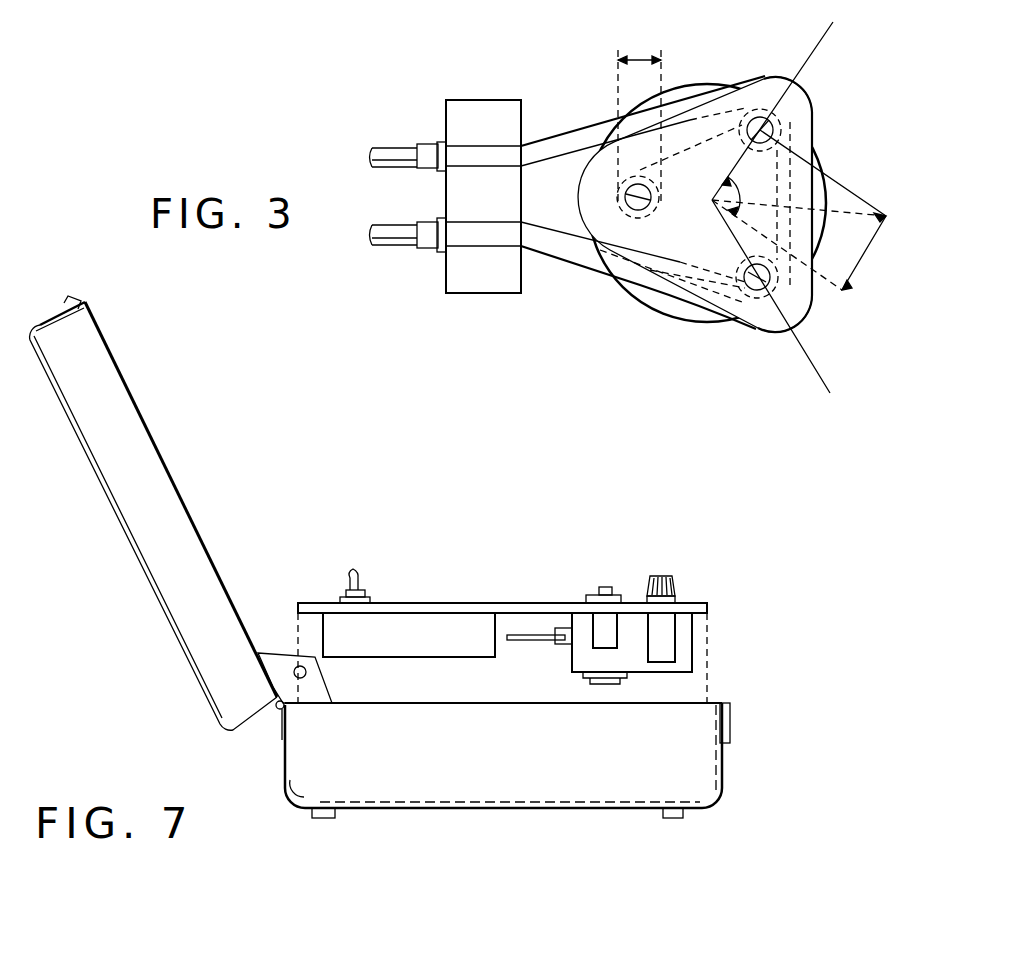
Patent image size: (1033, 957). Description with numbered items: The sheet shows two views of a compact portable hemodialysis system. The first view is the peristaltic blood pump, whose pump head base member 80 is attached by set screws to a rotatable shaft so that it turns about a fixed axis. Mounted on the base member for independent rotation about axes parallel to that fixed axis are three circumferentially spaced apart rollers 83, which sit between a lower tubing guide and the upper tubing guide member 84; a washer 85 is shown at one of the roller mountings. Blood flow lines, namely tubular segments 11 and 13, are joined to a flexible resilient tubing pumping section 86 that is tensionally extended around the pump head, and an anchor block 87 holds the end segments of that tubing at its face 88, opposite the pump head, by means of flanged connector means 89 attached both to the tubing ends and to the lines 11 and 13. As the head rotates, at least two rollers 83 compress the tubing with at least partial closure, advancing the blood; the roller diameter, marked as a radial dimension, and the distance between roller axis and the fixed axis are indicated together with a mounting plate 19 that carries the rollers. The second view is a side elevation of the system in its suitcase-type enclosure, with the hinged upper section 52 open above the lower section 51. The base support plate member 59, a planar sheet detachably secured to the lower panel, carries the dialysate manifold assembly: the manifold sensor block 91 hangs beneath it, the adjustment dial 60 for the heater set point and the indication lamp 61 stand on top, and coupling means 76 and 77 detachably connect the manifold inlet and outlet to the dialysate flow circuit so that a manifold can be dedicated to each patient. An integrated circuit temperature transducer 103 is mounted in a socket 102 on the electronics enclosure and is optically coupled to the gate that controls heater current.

In FIG. 3, the tubular segment 11 is at (398, 243).
In FIG. 3, the tubular segment 13 is at (397, 153).
In FIG. 3, the mounting plate 19 is at (701, 78).
In FIG. 3, the pump head base member 80 is at (680, 300).
In FIG. 3, the rollers 83 is at (760, 293).
In FIG. 3, the upper tubing guide member 84 is at (770, 80).
In FIG. 3, the washer 85 is at (750, 298).
In FIG. 3, the flexible resilient tubing pumping section 86 is at (578, 258).
In FIG. 3, the anchor block 87 is at (470, 273).
In FIG. 3, the face of the anchor block 88 is at (446, 188).
In FIG. 3, the flanged connector means 89 is at (440, 252).
In FIG. 7, the lower section 51 is at (565, 797).
In FIG. 7, the upper section 52 is at (157, 553).
In FIG. 7, the base support plate member 59 is at (472, 605).
In FIG. 7, the adjustment dial 60 is at (677, 598).
In FIG. 7, the indication lamp 61 is at (588, 595).
In FIG. 7, the inlet opening / coupling means 76 is at (351, 578).
In FIG. 7, the coupling means 77 is at (358, 582).
In FIG. 7, the manifold sensor block 91 is at (397, 643).
In FIG. 7, the socket 102 is at (565, 648).
In FIG. 7, the integrated circuit temperature transducer 103 is at (545, 641).